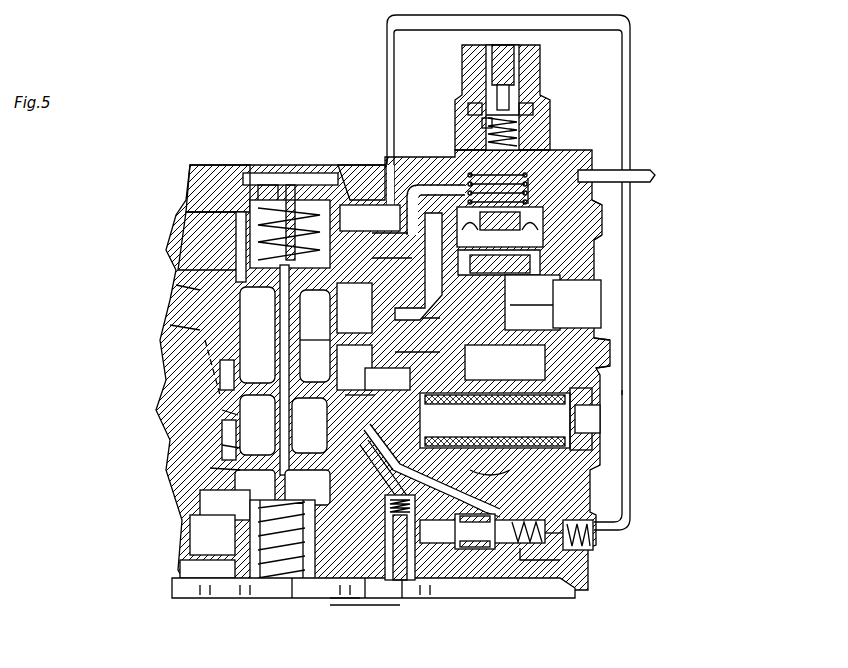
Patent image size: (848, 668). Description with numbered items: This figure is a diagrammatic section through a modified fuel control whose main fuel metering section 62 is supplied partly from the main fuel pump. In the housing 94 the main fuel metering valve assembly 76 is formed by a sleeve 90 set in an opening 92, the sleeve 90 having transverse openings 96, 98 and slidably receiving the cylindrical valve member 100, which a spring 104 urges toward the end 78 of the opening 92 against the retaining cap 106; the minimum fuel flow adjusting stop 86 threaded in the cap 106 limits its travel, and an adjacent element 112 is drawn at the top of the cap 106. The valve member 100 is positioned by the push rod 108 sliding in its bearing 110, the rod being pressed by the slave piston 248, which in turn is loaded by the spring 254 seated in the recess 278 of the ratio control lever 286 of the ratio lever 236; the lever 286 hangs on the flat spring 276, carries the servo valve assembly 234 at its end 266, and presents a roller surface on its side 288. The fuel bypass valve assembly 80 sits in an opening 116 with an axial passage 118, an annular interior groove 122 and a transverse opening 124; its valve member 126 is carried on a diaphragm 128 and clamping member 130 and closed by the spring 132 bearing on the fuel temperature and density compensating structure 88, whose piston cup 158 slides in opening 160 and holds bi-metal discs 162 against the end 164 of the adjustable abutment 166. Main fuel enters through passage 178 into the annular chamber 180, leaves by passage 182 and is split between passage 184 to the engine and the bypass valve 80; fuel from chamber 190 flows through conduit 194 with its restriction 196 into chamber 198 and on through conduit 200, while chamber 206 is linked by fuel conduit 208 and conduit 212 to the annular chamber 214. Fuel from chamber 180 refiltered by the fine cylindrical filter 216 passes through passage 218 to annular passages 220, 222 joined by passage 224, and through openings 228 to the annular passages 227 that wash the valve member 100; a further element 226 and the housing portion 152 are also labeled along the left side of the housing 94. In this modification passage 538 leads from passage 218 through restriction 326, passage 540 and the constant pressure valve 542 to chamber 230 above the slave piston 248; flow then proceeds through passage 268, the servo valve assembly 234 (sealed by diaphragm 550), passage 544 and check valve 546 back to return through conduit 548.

The main fuel metering section 62 is at (644, 130).
The main fuel metering valve assembly 76 is at (257, 371).
The end of opening 78 is at (309, 425).
The fuel bypass valve assembly 80 is at (552, 295).
The minimum fuel flow adjusting stop 86 is at (302, 173).
The fuel temperature and density compensating structure 88 is at (546, 98).
The sleeve 90 is at (354, 367).
The opening 92 is at (315, 336).
The housing 94 is at (392, 160).
The opening 96 is at (354, 308).
The opening 98 is at (222, 375).
The valve member 100 is at (314, 350).
The spring 104 is at (200, 185).
The retaining cap 106 is at (340, 165).
The push rod 108 is at (255, 487).
The bearing 110 is at (307, 487).
The stem 112 is at (268, 185).
The opening 116 is at (577, 304).
The axially extending passage 118 is at (602, 347).
The annular interior groove 122 is at (596, 211).
The transversely extending opening 124 is at (532, 313).
The valve member 126 is at (606, 233).
The diaphragm 128 is at (467, 204).
The clamping member 130 is at (500, 227).
The spring 132 is at (540, 196).
The housing 152 is at (176, 288).
The piston cup 158 is at (520, 126).
The opening 160 is at (482, 104).
The bi-metal discs 162 is at (480, 128).
The end of adjustable abutment 164 is at (535, 110).
The adjustable abutment 166 is at (480, 62).
The passage 178 is at (490, 473).
The annular chamber 180 is at (505, 362).
The passage 182 is at (602, 363).
The passage 184 is at (387, 379).
The chamber 190 is at (172, 332).
The conduit 194 is at (416, 327).
The restriction 196 is at (392, 235).
The chamber 198 is at (522, 143).
The conduit 200 is at (650, 170).
The chamber 206 is at (250, 262).
The fuel conduit 208 is at (192, 212).
The conduit 212 is at (392, 251).
The annular chamber 214 is at (416, 344).
The fine cylindrical filter 216 is at (470, 405).
The passage 218 is at (370, 400).
The annular passage 220 is at (224, 438).
The annular passage 222 is at (236, 240).
The passage 224 is at (215, 362).
The passage 226 is at (222, 448).
The annular passages 227 is at (222, 414).
The openings 228 is at (230, 402).
The chamber 230 is at (212, 470).
The servo valve assembly 234 is at (440, 575).
The ratio lever 236 is at (345, 600).
The slave piston 248 is at (190, 520).
The spring 254 is at (270, 595).
The end of ratio lever 266 is at (410, 598).
The passage 268 is at (381, 472).
The flat spring 276 is at (180, 567).
The recess 278 is at (296, 598).
The ratio control lever 286 is at (345, 612).
The side 288 is at (176, 590).
The restriction 326 is at (205, 495).
The passage 538 is at (421, 470).
The passage 540 is at (385, 550).
The constant pressure valve 542 is at (488, 572).
The passage 544 is at (530, 565).
The check valve 546 is at (594, 545).
The conduit 548 is at (631, 388).
The diaphragm 550 is at (370, 600).